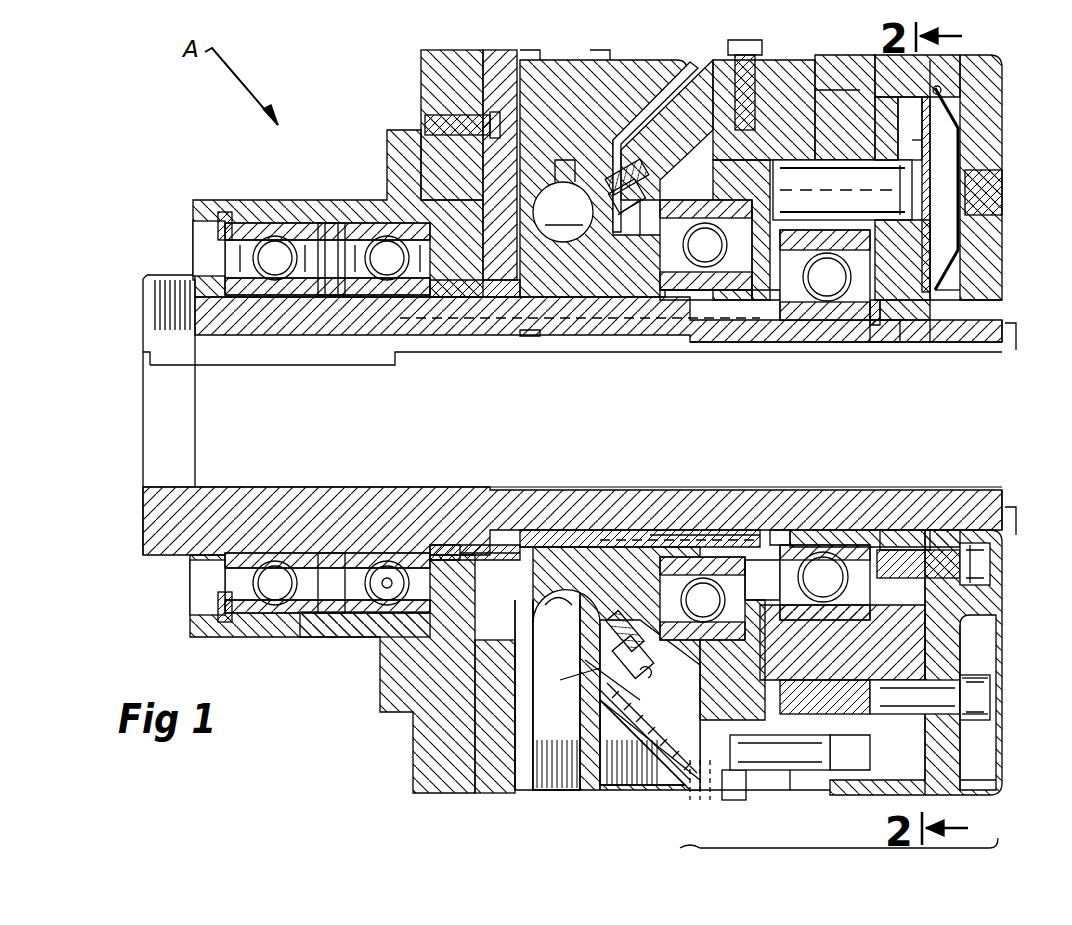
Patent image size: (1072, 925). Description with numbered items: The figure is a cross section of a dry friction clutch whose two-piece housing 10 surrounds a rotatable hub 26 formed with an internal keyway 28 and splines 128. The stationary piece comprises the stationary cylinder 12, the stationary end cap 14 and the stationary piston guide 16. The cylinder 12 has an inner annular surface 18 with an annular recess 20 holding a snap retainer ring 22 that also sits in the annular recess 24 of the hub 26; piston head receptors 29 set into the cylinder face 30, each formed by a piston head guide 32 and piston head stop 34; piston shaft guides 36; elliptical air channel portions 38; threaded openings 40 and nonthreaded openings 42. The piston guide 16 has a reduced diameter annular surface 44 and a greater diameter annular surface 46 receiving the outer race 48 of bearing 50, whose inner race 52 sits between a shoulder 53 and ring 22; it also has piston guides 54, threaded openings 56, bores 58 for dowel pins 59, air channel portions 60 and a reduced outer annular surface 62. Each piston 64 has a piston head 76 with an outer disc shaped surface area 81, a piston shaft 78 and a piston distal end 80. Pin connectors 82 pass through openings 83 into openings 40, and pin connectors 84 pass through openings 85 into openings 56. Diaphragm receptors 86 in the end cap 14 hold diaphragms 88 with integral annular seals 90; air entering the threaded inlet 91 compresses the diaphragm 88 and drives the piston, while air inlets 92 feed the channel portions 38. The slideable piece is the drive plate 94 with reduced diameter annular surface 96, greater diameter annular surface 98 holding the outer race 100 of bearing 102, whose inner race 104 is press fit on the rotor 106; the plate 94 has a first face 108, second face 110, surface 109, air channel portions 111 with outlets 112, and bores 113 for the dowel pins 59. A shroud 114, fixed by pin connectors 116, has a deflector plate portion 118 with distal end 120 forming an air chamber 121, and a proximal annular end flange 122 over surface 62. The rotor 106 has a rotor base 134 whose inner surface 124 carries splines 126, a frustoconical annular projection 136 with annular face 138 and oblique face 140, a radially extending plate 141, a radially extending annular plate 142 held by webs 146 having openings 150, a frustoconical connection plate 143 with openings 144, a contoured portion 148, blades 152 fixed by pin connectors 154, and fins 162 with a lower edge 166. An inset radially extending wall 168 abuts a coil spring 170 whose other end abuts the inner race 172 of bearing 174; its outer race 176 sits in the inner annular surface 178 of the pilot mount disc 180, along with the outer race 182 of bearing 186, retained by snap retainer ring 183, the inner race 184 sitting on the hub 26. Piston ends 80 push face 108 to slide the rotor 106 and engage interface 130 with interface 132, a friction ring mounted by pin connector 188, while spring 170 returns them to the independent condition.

The two-piece housing 10 is at (820, 854).
The stationary cylinder 12 is at (854, 48).
The stationary end cap 14 is at (1012, 58).
The stationary piston guide 16 is at (794, 48).
The inner annular surface 18 is at (930, 342).
The annular recess 20 is at (872, 322).
The snap retainer ring 22 is at (880, 340).
The annular recess 24 is at (900, 540).
The rotatable hub 26 is at (128, 526).
The internal keyway 28 is at (1005, 350).
The piston head receptors 29 is at (905, 112).
The cylinder face 30 is at (970, 320).
The piston head guide 32 is at (930, 50).
The piston head stop 34 is at (895, 322).
The piston shaft guides 36 is at (886, 189).
The air channel portions 38 is at (965, 785).
The threaded openings 40 is at (915, 550).
The nonthreaded openings 42 is at (930, 697).
The reduced diameter annular surface 44 is at (775, 302).
The greater diameter annular surface 46 is at (830, 262).
The outer race 48 is at (842, 642).
The bearing 50 is at (838, 591).
The inner race 52 is at (815, 530).
The shoulder 53 is at (780, 530).
The piston guides 54 is at (842, 190).
The threaded openings 56 is at (825, 690).
The bores 58 is at (842, 790).
The dowel pins 59 is at (870, 744).
The air channel portions 60 is at (860, 770).
The reduced outer annular surface 62 is at (800, 790).
The piston 64 is at (952, 149).
The piston head 76 is at (905, 135).
The piston shaft 78 is at (840, 186).
The piston distal end 80 is at (762, 182).
The outer disc shaped surface area 81 is at (958, 128).
The pin connectors 82 is at (985, 578).
The openings 83 is at (985, 556).
The pin connectors 84 is at (990, 712).
The openings 85 is at (990, 690).
The diaphragm receptors 86 is at (955, 260).
The diaphragms 88 is at (960, 235).
The integral annular seal 90 is at (940, 90).
The threaded inlet 91 is at (1002, 180).
The air inlets 92 is at (970, 748).
The drive plate 94 is at (790, 82).
The reduced diameter annular surface 96 is at (752, 300).
The greater diameter annular surface 98 is at (648, 218).
The outer race 100 is at (760, 560).
The bearing 102 is at (690, 265).
The inner race 104 is at (730, 300).
The rotor 106 is at (568, 58).
The first face 108 is at (770, 95).
The surface 109 is at (690, 652).
The second face 110 is at (652, 662).
The air channel portions 111 is at (663, 807).
The outlet 112 is at (660, 798).
The bores 113 is at (708, 797).
The shroud 114 is at (700, 50).
The pin connectors 116 is at (745, 40).
The deflector plate portion 118 is at (686, 62).
The distal end 120 is at (600, 700).
The air chamber 121 is at (615, 706).
The proximal annular end flange 122 is at (775, 790).
The inner surface 124 is at (622, 320).
The splines 126 is at (585, 545).
The splines 128 is at (498, 548).
The interface 130 is at (510, 38).
The interface 132 is at (478, 50).
The rotor base 134 is at (606, 540).
The frustoconical annular projection 136 is at (650, 545).
The annular face 138 is at (668, 540).
The oblique face 140 is at (585, 300).
The radially extending plate 141 is at (522, 792).
The radially extending annular plate 142 is at (592, 792).
The frustoconical connection plate 143 is at (600, 668).
The openings 144 is at (566, 684).
The webs 146 is at (560, 792).
The contoured portion 148 is at (556, 595).
The openings 150 is at (563, 221).
The blades 152 is at (640, 168).
The pin connectors 154 is at (640, 188).
The fins 162 is at (630, 785).
The lower edge 166 is at (680, 780).
The inset radially extending wall 168 is at (520, 548).
The coil spring 170 is at (468, 545).
The inner race 172 is at (380, 553).
The bearing 174 is at (390, 580).
The outer race 176 is at (350, 637).
The inner annular surface 178 is at (331, 230).
The pilot mount disc 180 is at (180, 206).
The outer race 182 is at (250, 637).
The snap retainer ring 183 is at (215, 225).
The inner race 184 is at (268, 553).
The bearing 186 is at (265, 258).
The pin connector 188 is at (425, 124).